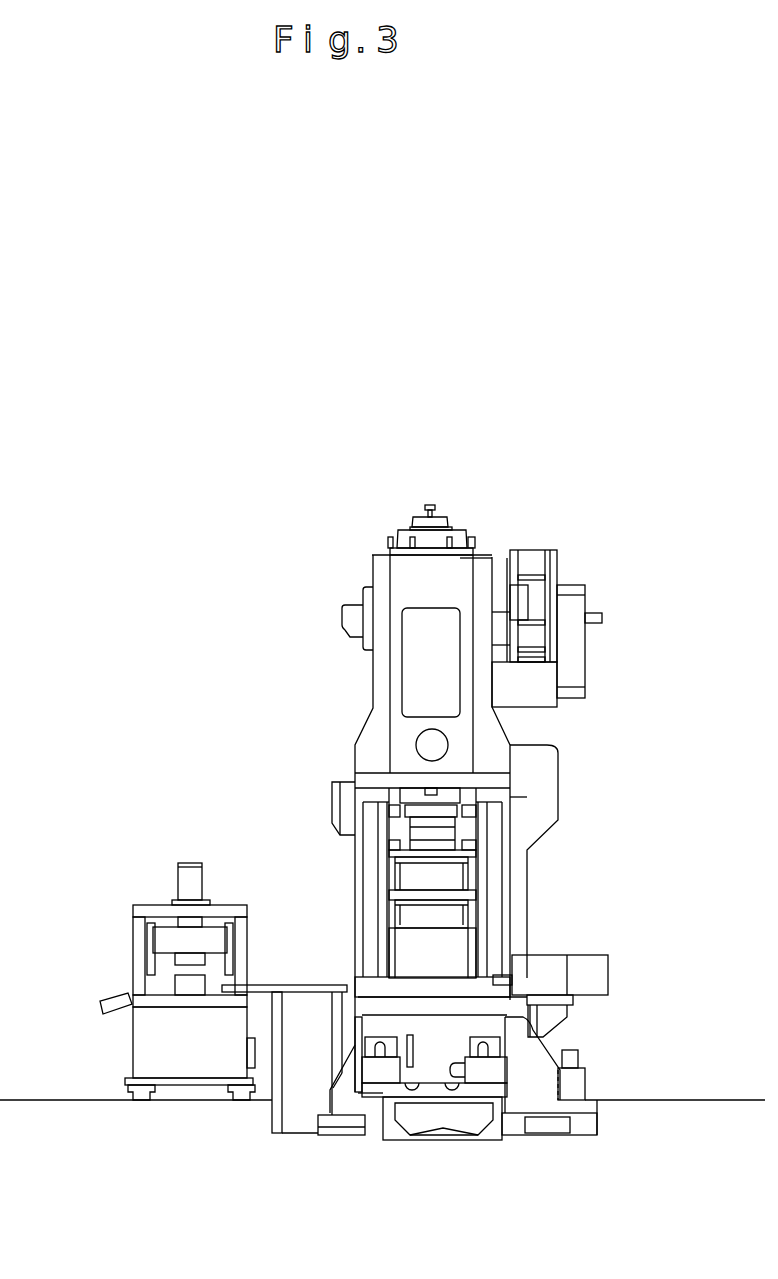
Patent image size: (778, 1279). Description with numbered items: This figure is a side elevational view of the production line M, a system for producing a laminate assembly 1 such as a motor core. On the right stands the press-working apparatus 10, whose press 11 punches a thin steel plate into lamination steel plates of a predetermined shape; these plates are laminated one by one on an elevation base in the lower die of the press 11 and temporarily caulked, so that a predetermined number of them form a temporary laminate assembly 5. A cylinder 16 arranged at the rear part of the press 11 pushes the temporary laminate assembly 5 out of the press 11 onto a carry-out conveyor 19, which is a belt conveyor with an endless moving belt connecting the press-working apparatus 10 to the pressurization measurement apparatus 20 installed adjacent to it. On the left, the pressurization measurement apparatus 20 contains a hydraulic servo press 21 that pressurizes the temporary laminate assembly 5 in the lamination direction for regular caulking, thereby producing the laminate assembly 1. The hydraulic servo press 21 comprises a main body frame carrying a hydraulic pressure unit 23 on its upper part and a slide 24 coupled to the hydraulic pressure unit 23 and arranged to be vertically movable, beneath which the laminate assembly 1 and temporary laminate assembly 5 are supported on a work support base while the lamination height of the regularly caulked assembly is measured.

The press-working apparatus 10 is at (350, 505).
The production line M is at (425, 480).
The press 11 is at (500, 537).
The cylinder 16 is at (585, 968).
The carry-out conveyor 19 is at (293, 987).
The pressurization measurement apparatus 20 is at (186, 735).
The hydraulic servo press 21 is at (152, 898).
The hydraulic pressure unit 23 is at (208, 895).
The slide 24 is at (167, 942).
The laminate assembly 1 is at (190, 987).
The temporary laminate assembly 5 is at (190, 985).